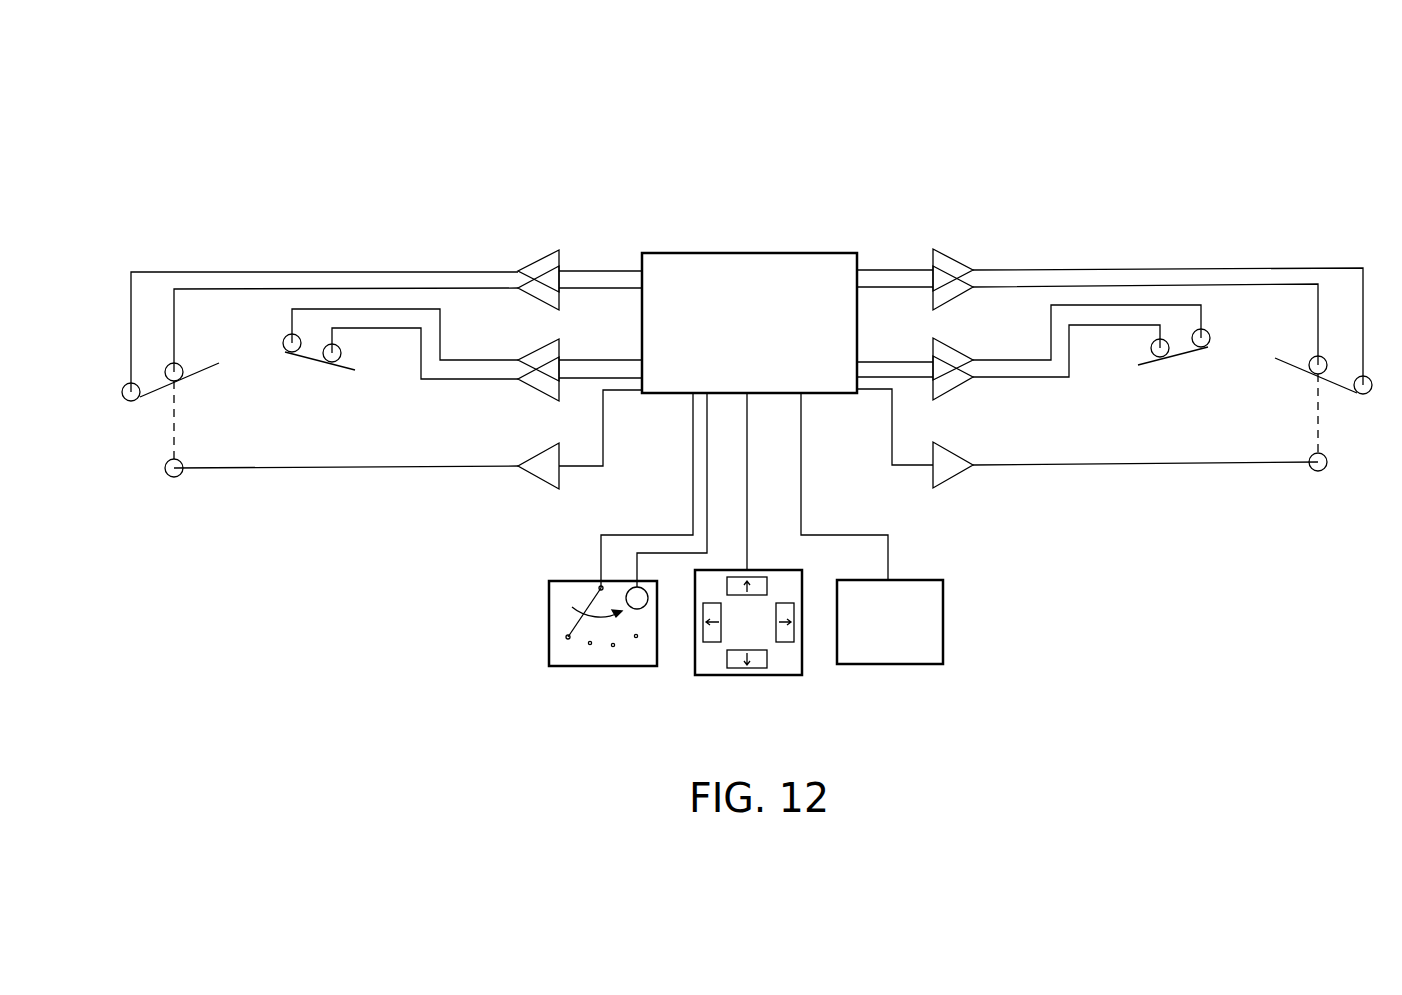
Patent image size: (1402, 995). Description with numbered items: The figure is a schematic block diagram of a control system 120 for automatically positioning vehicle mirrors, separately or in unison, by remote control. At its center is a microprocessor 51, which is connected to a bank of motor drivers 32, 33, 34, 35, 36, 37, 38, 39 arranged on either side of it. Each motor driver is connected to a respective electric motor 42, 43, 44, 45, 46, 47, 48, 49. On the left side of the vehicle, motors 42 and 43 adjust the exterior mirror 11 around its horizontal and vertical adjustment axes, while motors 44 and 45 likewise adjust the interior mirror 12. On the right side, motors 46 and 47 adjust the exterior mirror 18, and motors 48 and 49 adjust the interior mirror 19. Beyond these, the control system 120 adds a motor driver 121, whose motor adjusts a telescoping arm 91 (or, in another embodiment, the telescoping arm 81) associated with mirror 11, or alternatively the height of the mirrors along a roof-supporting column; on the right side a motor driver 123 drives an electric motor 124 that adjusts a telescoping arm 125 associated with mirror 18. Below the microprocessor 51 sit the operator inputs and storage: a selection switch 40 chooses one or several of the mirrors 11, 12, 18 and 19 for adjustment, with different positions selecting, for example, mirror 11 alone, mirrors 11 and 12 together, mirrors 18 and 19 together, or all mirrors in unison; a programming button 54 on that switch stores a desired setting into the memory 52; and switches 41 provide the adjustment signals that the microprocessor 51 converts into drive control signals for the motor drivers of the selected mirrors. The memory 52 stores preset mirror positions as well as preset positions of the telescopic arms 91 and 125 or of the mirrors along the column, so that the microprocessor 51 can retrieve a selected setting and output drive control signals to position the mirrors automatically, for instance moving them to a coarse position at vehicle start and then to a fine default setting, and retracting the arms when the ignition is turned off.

The control system 120 is at (594, 223).
The microprocessor 51 is at (775, 263).
The motor driver 32 is at (530, 266).
The motor driver 33 is at (548, 290).
The motor driver 34 is at (540, 357).
The motor driver 35 is at (548, 388).
The motor driver 36 is at (953, 262).
The motor driver 37 is at (956, 290).
The motor driver 38 is at (954, 355).
The motor driver 39 is at (955, 386).
The motor driver 121 is at (548, 478).
The motor driver 123 is at (953, 477).
The electric motor 42 is at (125, 386).
The electric motor 43 is at (175, 363).
The electric motor 44 is at (283, 343).
The electric motor 45 is at (341, 352).
The electric motor 46 is at (1368, 377).
The electric motor 47 is at (1316, 359).
The electric motor 48 is at (1208, 341).
The electric motor 49 is at (1152, 348).
The exterior mirror 11 is at (197, 383).
The interior mirror 12 is at (310, 366).
The exterior mirror 18 is at (1302, 372).
The interior mirror 19 is at (1162, 368).
The contact 81 is at (120, 452).
The telescoping arm 91 is at (172, 427).
The electric motor 124 is at (1316, 472).
The telescoping arm 125 is at (1321, 414).
The selection switch 40 is at (549, 646).
The programming button 54 is at (652, 584).
The switches 41 is at (748, 677).
The memory 52 is at (888, 665).